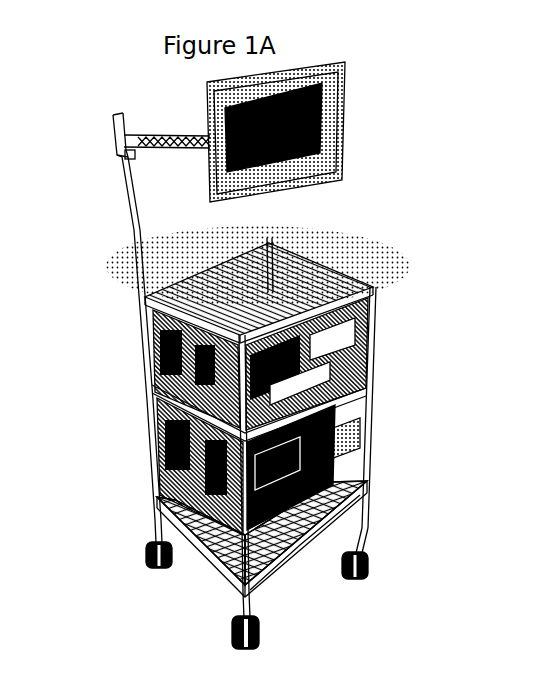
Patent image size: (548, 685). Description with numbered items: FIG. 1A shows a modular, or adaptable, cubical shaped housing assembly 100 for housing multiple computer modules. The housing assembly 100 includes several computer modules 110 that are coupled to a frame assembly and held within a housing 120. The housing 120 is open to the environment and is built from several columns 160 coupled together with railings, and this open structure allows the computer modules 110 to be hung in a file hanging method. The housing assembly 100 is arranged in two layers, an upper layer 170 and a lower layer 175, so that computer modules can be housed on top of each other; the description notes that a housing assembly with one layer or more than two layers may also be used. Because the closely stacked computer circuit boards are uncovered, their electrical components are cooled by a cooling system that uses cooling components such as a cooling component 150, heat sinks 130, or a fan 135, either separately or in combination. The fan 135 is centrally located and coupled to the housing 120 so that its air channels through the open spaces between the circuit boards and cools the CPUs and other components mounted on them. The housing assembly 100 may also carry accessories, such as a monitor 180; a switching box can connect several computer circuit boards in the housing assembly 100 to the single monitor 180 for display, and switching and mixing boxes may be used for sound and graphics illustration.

The housing assembly 100 is at (387, 165).
The computer modules 110 is at (355, 491).
The housing 120 is at (157, 518).
The heat sinks 130 is at (345, 441).
The fan 135 is at (292, 580).
The cooling component 150 is at (140, 307).
The columns 160 is at (372, 360).
The upper layer 170 is at (132, 303).
The lower layer 175 is at (139, 393).
The monitor 180 is at (330, 73).